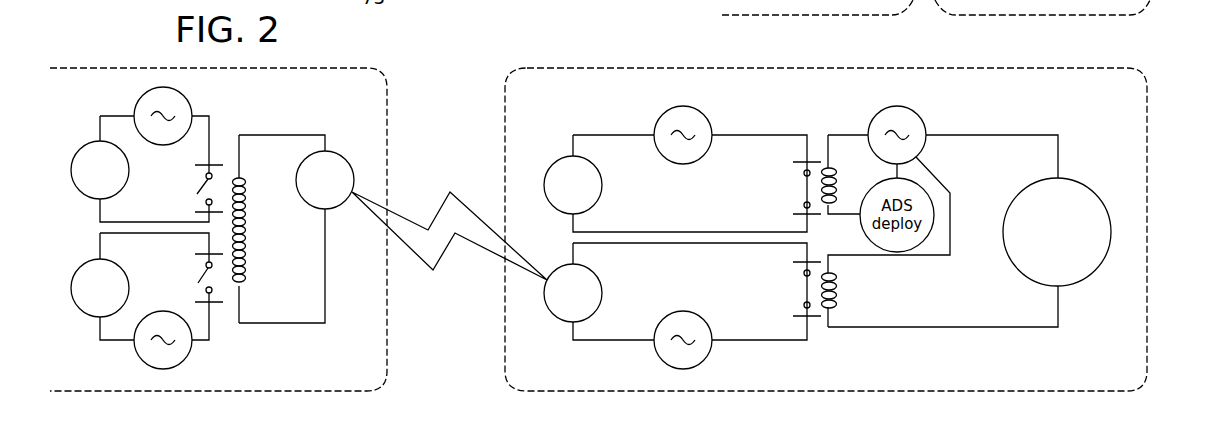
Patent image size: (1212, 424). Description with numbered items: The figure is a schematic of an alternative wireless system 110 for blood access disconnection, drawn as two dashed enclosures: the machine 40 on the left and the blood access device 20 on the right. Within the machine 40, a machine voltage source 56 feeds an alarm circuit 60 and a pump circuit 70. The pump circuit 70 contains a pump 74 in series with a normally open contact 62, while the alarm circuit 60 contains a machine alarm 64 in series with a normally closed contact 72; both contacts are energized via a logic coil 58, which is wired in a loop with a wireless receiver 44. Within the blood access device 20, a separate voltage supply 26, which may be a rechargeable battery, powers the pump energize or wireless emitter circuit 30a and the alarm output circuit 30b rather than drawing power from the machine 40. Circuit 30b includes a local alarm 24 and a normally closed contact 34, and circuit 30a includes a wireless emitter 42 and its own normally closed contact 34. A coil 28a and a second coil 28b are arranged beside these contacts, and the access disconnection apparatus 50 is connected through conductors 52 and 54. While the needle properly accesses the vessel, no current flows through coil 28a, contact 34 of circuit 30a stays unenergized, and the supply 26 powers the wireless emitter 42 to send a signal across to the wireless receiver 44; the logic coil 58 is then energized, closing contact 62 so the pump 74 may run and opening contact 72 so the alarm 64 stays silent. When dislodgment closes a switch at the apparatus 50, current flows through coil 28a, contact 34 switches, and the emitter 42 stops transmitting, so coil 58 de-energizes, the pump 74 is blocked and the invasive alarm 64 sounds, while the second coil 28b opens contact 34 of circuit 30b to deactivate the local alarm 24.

The wireless system 110 is at (99, 34).
The blood access device 20 is at (1136, 62).
The local alarm 24 is at (602, 187).
The voltage supply 26 is at (684, 164).
The coil 28a is at (838, 283).
The second coil 28b is at (838, 182).
The pump energize or wireless emitter circuit 30a is at (793, 348).
The alarm output circuit 30b is at (793, 128).
The normally closed contact 34 is at (805, 188).
The machine 40 is at (379, 60).
The wireless emitter 42 is at (602, 270).
The wireless receiver 44 is at (343, 153).
The access disconnection apparatus 50 is at (1092, 192).
The conductor 52 is at (1051, 155).
The conductor 54 is at (1051, 316).
The machine voltage source 56 is at (192, 97).
The logic coil 58 is at (247, 233).
The alarm circuit 60 is at (104, 346).
The normally open contact 62 is at (200, 187).
The machine alarm 64 is at (77, 267).
The pump circuit 70 is at (103, 110).
The normally closed contact 72 is at (205, 274).
The pump 74 is at (82, 193).